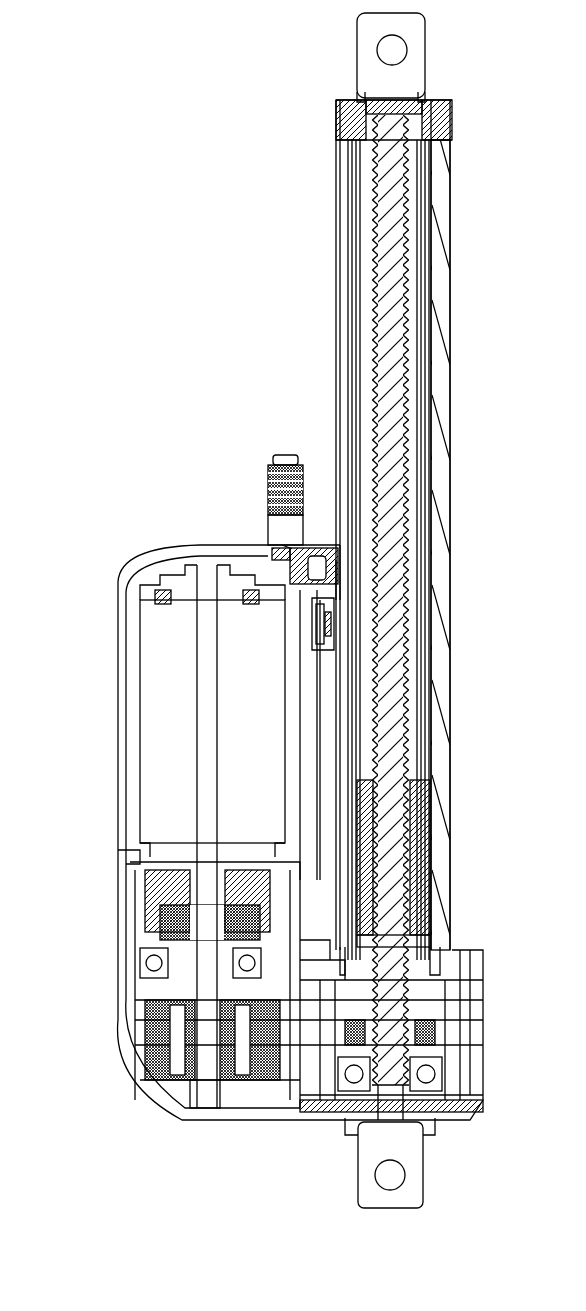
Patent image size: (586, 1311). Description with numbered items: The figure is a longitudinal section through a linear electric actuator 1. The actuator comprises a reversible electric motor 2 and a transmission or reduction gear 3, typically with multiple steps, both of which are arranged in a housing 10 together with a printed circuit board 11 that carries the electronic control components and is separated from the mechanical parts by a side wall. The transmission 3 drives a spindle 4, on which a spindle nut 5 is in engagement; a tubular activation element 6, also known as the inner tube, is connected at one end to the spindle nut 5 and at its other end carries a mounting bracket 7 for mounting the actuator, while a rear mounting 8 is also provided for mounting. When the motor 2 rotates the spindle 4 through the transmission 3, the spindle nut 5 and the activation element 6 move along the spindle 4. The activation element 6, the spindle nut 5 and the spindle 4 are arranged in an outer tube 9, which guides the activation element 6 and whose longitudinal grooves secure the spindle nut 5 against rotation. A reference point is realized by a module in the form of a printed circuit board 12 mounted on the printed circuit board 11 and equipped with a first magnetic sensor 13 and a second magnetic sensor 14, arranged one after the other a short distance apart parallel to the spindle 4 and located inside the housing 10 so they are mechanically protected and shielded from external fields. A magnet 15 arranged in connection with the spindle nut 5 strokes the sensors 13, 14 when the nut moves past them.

The linear electric actuator 1 is at (237, 297).
The reversible electric motor 2 is at (157, 719).
The reduction gear 3 is at (120, 1002).
The spindle 4 is at (385, 757).
The spindle nut 5 is at (418, 846).
The tubular activation element 6 is at (430, 772).
The mounting bracket 7 is at (420, 60).
The rear mounting bracket 8 is at (410, 1162).
The outer tube 9 is at (440, 495).
The housing 10 is at (120, 858).
The printed circuit board 11 is at (315, 710).
The printed circuit board 12 is at (334, 610).
The first magnetic sensor 13 is at (324, 623).
The second magnetic sensor 14 is at (331, 640).
The magnet 15 is at (375, 920).